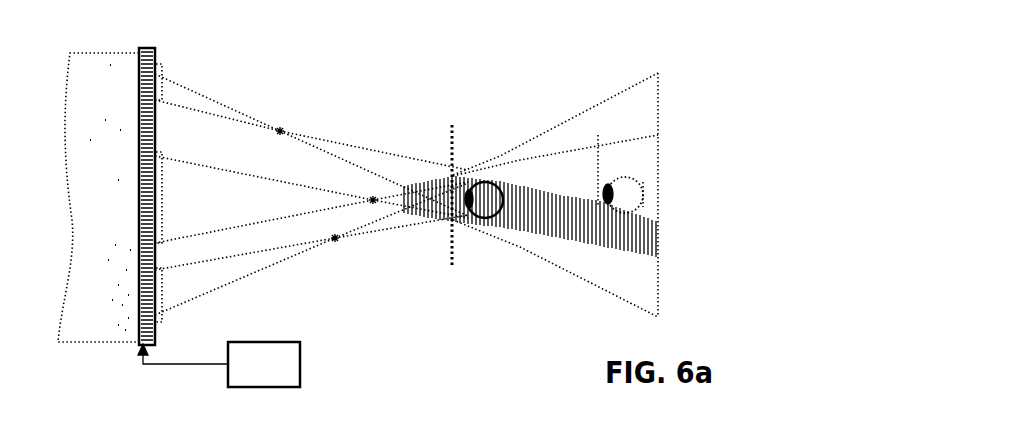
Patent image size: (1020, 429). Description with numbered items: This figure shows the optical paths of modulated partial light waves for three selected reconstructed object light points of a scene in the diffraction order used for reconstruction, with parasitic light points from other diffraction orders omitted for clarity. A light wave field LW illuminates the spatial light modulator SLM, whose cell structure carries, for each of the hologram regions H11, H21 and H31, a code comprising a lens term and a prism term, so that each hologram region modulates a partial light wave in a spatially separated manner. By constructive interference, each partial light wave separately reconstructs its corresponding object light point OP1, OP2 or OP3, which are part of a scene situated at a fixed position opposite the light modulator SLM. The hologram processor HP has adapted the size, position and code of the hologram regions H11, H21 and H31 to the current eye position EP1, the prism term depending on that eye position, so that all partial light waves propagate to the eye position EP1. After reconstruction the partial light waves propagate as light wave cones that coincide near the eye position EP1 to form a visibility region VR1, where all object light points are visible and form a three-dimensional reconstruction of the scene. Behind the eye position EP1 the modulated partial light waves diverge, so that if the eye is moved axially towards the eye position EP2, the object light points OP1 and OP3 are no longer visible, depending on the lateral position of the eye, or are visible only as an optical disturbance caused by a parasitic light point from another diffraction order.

The spatial light modulator SLM is at (148, 184).
The light wave field LW is at (78, 197).
The hologram processor HP is at (219, 364).
The hologram region H31 is at (160, 80).
The hologram region H21 is at (157, 163).
The hologram region H11 is at (155, 313).
The object light point OP3 is at (301, 107).
The object light point OP2 is at (346, 186).
The object light point OP1 is at (338, 260).
The visibility region VR1 is at (424, 198).
The eye position EP1 is at (468, 195).
The eye position EP2 is at (606, 192).